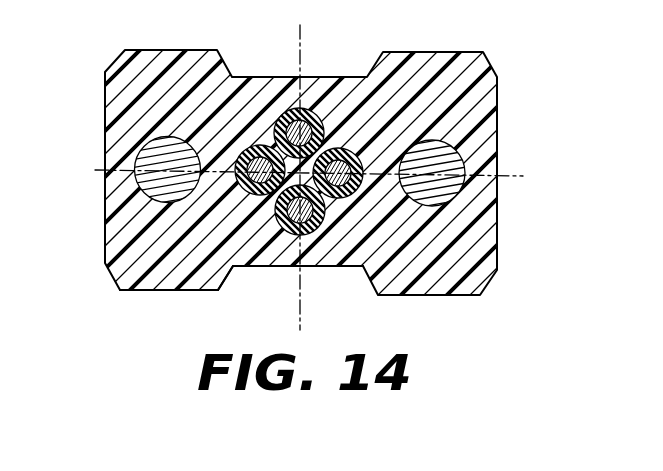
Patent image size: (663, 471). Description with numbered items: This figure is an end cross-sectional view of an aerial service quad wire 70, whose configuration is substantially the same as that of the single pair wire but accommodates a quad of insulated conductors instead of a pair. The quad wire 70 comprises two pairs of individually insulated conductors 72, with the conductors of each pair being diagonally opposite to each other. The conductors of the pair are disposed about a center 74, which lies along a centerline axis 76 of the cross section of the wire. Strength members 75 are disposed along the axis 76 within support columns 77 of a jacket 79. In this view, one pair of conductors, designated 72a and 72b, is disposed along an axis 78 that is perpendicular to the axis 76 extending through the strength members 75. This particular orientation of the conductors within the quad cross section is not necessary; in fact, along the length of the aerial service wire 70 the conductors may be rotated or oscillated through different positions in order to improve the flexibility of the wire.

The quad wire 70 is at (118, 290).
The individually insulated conductors 72 is at (264, 148).
The conductor 72a is at (303, 111).
The conductor 72b is at (318, 228).
The center 74 is at (338, 173).
The strength members 75 is at (184, 140).
The centerline axis 76 is at (511, 175).
The support columns 77 is at (163, 283).
The axis 78 is at (305, 283).
The jacket 79 is at (261, 258).